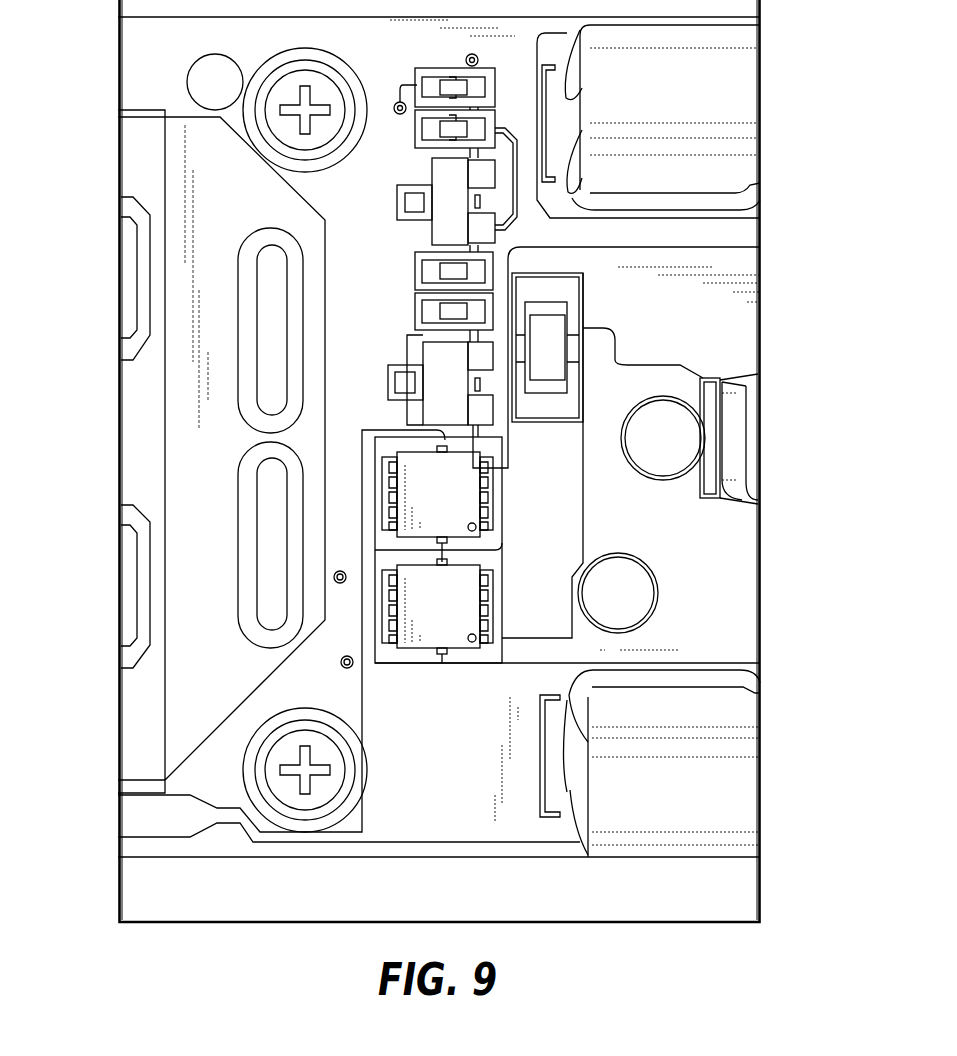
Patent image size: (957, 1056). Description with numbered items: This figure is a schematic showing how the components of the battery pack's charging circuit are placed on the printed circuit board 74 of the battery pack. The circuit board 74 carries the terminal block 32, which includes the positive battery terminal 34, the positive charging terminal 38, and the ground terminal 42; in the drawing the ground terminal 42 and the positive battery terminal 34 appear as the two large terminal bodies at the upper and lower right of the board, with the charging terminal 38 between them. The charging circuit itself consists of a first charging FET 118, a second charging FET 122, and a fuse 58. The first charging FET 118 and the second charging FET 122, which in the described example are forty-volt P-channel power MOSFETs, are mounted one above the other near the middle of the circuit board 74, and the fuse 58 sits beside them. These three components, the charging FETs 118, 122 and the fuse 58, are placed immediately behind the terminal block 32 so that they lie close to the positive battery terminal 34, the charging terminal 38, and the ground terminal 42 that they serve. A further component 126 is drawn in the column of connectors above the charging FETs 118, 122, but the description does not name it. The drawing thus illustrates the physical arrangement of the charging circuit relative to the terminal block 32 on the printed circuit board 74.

The terminal block 32 is at (846, 318).
The printed circuit board 74 is at (163, 60).
The ground terminal 42 is at (702, 92).
The connector stack 126 is at (448, 213).
The fuse 58 is at (545, 347).
The positive charging terminal 38 is at (728, 438).
The first charging FET 118 is at (437, 493).
The second charging FET 122 is at (437, 610).
The positive battery terminal 34 is at (698, 800).